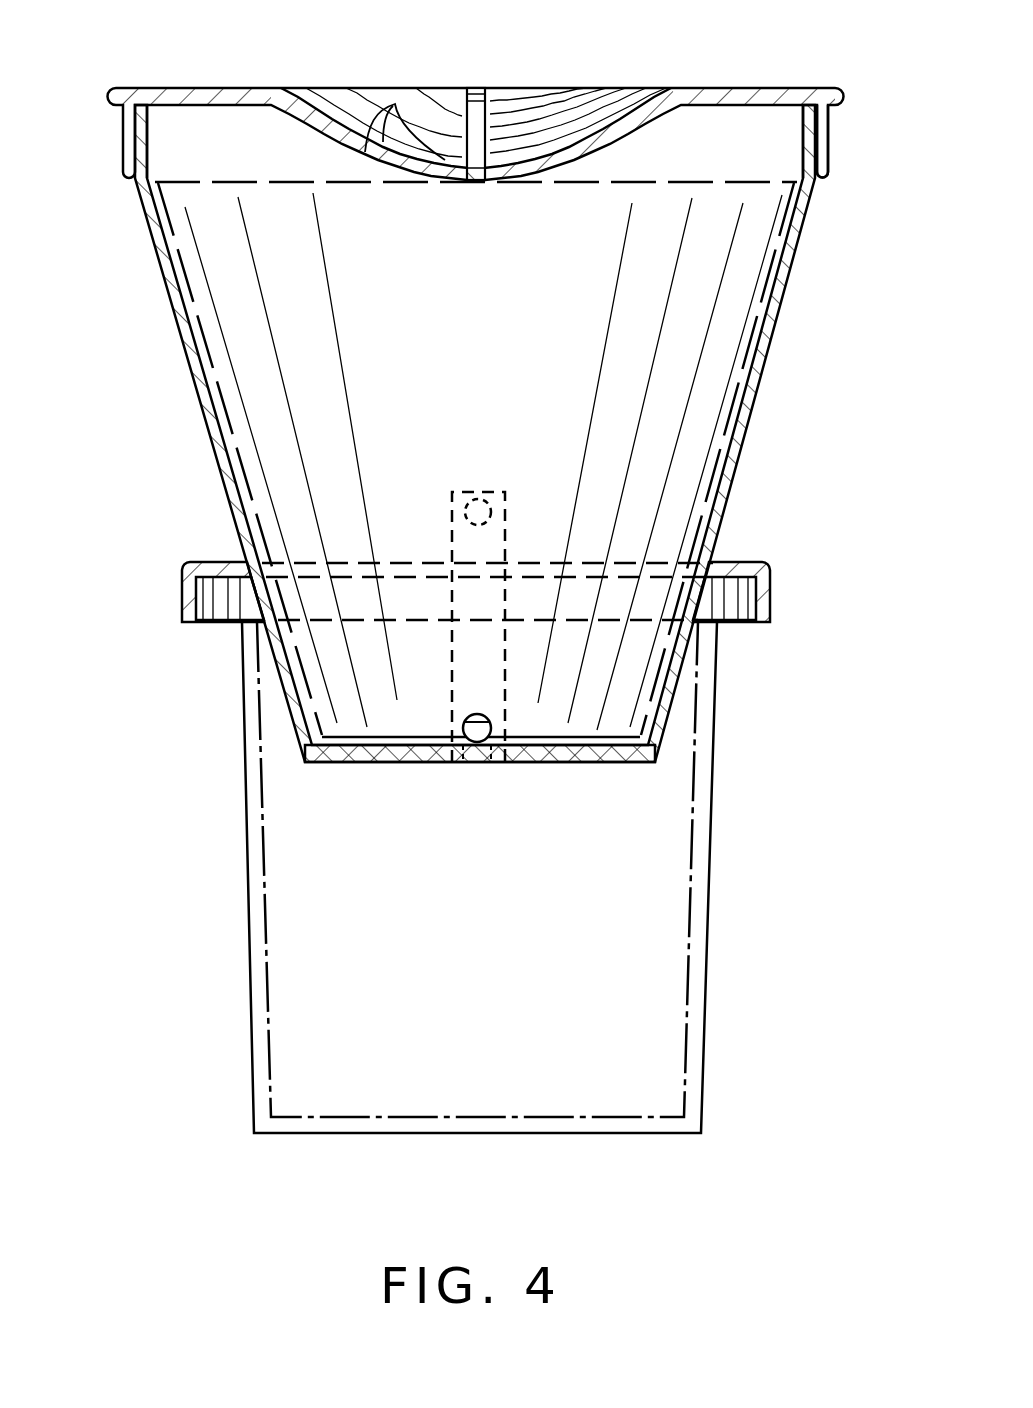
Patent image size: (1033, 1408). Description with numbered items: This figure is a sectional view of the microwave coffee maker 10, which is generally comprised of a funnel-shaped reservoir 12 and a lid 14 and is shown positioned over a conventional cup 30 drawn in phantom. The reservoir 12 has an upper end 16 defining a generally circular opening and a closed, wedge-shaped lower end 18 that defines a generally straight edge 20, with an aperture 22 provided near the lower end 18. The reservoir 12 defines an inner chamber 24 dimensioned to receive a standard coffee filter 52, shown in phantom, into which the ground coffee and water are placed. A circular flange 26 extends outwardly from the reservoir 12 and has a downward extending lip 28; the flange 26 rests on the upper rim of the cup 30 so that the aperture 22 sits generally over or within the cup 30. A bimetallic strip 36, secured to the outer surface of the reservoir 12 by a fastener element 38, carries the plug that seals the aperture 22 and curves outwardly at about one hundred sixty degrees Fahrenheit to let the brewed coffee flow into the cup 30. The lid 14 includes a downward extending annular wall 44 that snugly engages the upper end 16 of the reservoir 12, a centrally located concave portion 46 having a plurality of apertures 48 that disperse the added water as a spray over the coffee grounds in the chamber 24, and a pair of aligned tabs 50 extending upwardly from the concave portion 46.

The microwave coffee maker 10 is at (163, 419).
The reservoir 12 is at (773, 352).
The lid 14 is at (730, 88).
The upper end 16 is at (742, 157).
The lower end 18 is at (598, 685).
The straight edge 20 is at (402, 762).
The aperture 22 is at (468, 762).
The inner chamber 24 is at (478, 352).
The circular flange 26 is at (740, 563).
The downward extending lip 28 is at (775, 590).
The cup 30 is at (712, 810).
The bimetallic strip 36 is at (458, 548).
The fastener element 38 is at (478, 512).
The annular wall 44 is at (830, 130).
The concave portion 46 is at (362, 100).
The apertures 48 is at (386, 126).
The tabs 50 is at (470, 130).
The coffee filter 52 is at (262, 182).